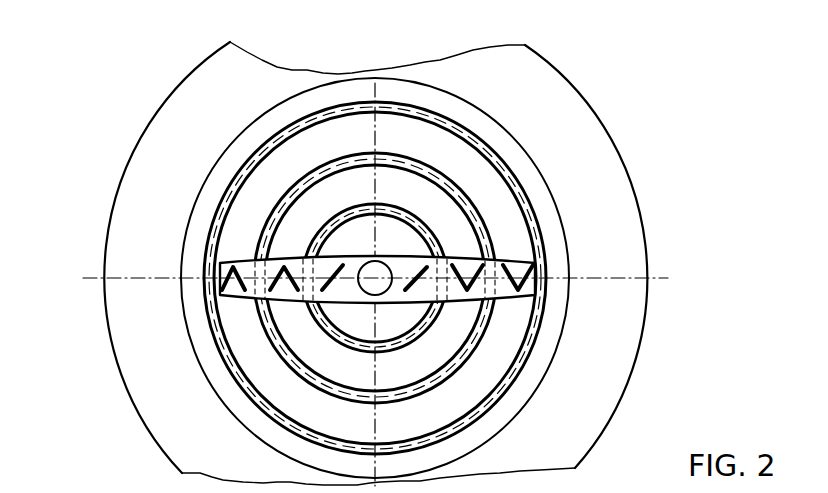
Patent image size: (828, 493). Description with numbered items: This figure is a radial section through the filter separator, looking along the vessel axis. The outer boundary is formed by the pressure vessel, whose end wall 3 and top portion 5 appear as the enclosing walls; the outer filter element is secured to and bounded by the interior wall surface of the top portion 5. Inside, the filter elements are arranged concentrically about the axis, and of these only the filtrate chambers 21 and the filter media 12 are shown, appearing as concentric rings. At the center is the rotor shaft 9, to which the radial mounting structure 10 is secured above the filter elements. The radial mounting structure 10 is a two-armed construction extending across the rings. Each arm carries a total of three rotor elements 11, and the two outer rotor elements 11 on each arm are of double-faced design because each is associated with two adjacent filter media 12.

The end wall 3 is at (622, 223).
The top portion 5 is at (555, 250).
The rotor shaft 9 is at (362, 268).
The radial mounting structure 10 is at (498, 296).
The rotor elements 11 is at (318, 302).
The filter media 12 is at (290, 183).
The filtrate chambers 21 is at (423, 222).